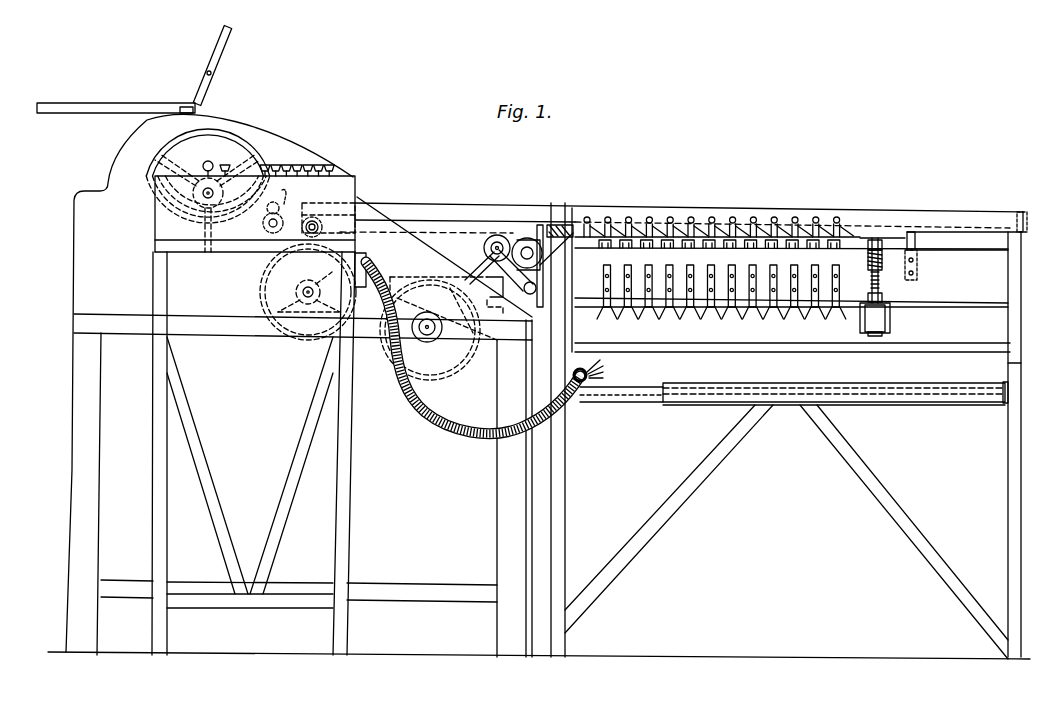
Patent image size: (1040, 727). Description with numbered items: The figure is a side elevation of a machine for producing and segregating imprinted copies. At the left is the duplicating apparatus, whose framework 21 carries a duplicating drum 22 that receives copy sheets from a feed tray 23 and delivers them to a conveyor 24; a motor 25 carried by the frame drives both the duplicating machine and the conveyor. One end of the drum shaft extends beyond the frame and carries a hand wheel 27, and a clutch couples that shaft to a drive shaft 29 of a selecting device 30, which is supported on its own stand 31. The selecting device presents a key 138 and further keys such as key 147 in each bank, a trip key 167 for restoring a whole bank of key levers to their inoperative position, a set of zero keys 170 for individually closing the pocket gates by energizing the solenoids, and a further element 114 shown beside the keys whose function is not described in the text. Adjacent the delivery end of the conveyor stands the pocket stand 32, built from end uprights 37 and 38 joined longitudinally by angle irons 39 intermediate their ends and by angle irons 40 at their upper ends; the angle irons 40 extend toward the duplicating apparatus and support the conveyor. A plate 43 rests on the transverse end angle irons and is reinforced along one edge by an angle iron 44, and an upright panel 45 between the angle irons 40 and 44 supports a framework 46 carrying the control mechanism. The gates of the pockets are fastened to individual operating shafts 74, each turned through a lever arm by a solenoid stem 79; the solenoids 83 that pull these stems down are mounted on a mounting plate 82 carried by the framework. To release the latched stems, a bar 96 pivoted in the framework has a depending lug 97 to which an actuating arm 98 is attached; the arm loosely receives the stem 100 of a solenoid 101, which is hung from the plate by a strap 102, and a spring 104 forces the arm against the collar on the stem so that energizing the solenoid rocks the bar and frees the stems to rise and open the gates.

The framework 21 is at (133, 138).
The feed tray 23 is at (193, 101).
The hand wheel 27 is at (147, 167).
The duplicating drum 22 is at (250, 150).
The drive shaft 29 is at (207, 194).
The knob 114 is at (211, 160).
The trip key 167 is at (226, 163).
The keys 170 is at (266, 165).
The key 147 is at (309, 163).
The key 138 is at (301, 165).
The selecting device 30 is at (334, 188).
The conveyor 24 is at (440, 207).
The stand 31 is at (163, 295).
The motor 25 is at (470, 381).
The angle irons 39 is at (637, 398).
The end uprights 37 is at (560, 468).
The end uprights 38 is at (1008, 483).
The framework 46 is at (566, 290).
The stand 32 is at (773, 182).
The angle irons 40 is at (682, 212).
The operating shafts 74 is at (670, 218).
The solenoid stem 79 is at (780, 232).
The mounting plate 82 is at (963, 265).
The solenoids 83 is at (685, 308).
The bar 96 is at (893, 238).
The depending lug 97 is at (878, 240).
The actuating arm 98 is at (887, 255).
The stem 100 is at (872, 270).
The solenoid 101 is at (885, 323).
The strap 102 is at (860, 323).
The spring 104 is at (882, 298).
The plate 43 is at (642, 383).
The angle iron 44 is at (913, 397).
The upright panel 45 is at (823, 365).